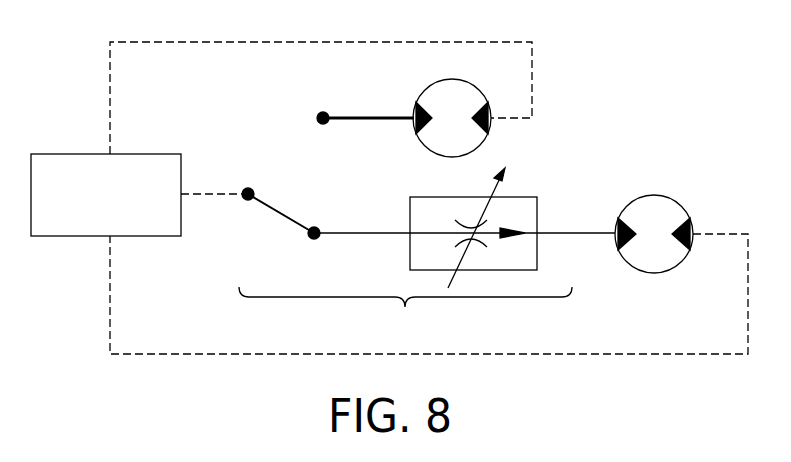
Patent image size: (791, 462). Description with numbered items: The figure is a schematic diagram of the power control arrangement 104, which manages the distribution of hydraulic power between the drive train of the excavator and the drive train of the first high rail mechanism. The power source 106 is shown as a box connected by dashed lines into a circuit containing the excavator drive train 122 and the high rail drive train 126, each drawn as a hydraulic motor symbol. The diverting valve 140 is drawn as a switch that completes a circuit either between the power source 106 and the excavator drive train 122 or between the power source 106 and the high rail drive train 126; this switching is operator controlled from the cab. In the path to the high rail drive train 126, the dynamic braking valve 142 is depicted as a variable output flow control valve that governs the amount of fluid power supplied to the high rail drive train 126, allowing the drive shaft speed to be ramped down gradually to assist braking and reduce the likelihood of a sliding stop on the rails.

The power source 106 is at (70, 153).
The excavator drive train 122 is at (422, 147).
The high rail drive train 126 is at (657, 195).
The diverting valve 140 is at (276, 214).
The dynamic braking valve 142 is at (537, 245).
The power control arrangement 104 is at (405, 309).